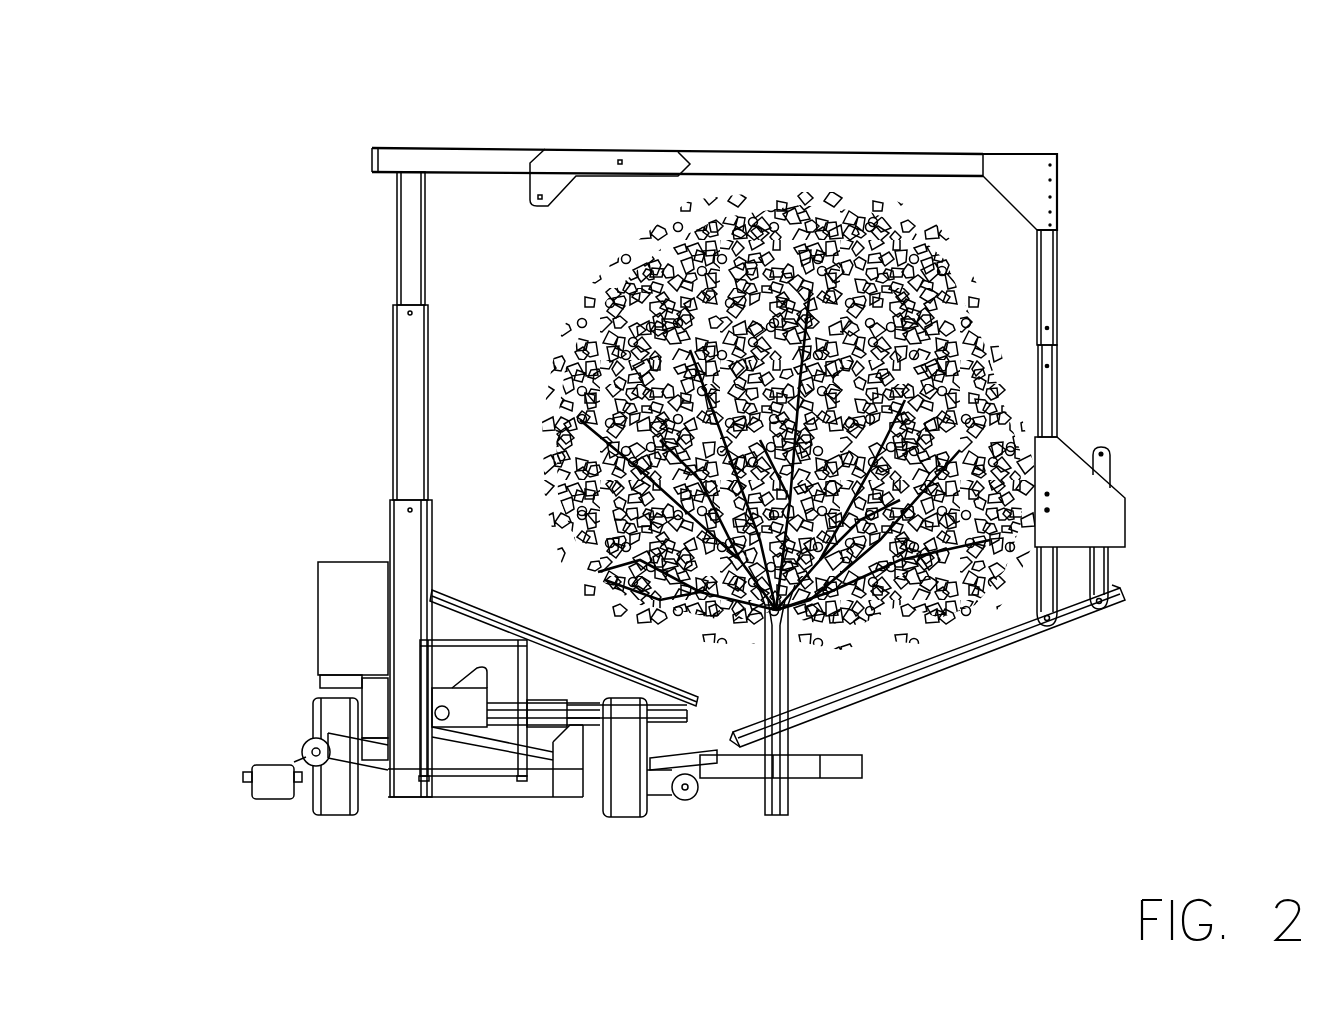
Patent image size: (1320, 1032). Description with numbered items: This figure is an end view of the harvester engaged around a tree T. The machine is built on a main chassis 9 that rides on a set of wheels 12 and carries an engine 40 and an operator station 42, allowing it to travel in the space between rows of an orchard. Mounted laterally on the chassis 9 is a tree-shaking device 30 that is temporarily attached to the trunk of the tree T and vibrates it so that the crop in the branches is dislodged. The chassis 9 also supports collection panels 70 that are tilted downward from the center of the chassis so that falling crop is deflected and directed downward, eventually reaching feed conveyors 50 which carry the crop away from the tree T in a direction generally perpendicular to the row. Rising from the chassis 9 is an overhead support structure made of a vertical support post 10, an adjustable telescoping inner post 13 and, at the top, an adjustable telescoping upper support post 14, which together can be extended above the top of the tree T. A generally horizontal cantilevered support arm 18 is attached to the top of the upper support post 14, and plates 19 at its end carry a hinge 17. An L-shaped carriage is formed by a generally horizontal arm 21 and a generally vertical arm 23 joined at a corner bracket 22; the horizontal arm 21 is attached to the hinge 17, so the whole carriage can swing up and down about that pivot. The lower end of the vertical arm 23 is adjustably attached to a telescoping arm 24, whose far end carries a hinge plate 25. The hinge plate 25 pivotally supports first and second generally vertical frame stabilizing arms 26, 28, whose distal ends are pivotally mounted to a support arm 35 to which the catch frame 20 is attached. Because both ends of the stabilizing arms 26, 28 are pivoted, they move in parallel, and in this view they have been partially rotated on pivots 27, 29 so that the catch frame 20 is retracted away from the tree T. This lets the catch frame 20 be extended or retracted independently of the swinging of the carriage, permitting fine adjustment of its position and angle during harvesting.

The main chassis 9 is at (440, 787).
The vertical support post 10 is at (388, 498).
The wheel 12 is at (312, 715).
The telescoping inner post 13 is at (410, 364).
The upper support post 14 is at (400, 232).
The hinge 17 is at (624, 160).
The cantilevered support arm 18 is at (468, 158).
The plate 19 is at (557, 162).
The catch frame 20 is at (997, 650).
The horizontal arm 21 is at (928, 162).
The corner bracket 22 is at (1062, 236).
The vertical arm 23 is at (1058, 286).
The telescoping arm 24 is at (1058, 400).
The hinge plate 25 is at (1127, 520).
The first frame stabilizing arm 26 is at (1105, 567).
The pivot 27 is at (1108, 487).
The second frame stabilizing arm 28 is at (1048, 582).
The pivot 29 is at (1052, 510).
The tree-shaking device 30 is at (852, 772).
The support arm 35 is at (1088, 620).
The engine 40 is at (318, 600).
The operator station 42 is at (530, 746).
The feed conveyor 50 is at (378, 757).
The collection panel 70 is at (485, 596).
The tree T is at (880, 575).